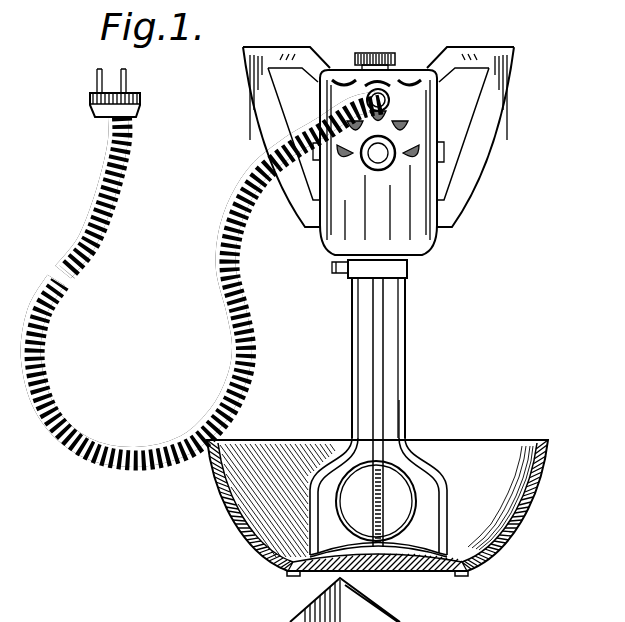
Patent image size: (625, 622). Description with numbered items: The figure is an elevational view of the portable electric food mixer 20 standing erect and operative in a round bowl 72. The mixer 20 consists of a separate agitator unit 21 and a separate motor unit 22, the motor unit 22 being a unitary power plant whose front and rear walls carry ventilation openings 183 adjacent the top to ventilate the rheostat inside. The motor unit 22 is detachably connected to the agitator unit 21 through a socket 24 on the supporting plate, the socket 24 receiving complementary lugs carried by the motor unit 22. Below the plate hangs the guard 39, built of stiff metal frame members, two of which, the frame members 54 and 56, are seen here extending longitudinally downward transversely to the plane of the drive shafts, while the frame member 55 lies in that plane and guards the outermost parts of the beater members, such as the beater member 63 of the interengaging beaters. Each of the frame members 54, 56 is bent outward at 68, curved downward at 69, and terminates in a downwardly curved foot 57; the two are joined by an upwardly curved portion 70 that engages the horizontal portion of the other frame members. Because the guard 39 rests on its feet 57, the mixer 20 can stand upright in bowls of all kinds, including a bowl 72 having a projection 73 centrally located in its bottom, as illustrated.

The electric food mixer 20 is at (413, 276).
The motor unit 22 is at (438, 193).
The socket 24 is at (408, 266).
The ventilation openings 183 is at (340, 77).
The guard 39 is at (352, 345).
The frame member 54 is at (352, 322).
The frame member 56 is at (398, 328).
The frame member 55 is at (380, 352).
The agitator unit 21 is at (405, 393).
The outward bend 68 is at (352, 440).
The downwardly curved portion 69 is at (327, 452).
The upwardly curved portion 70 is at (412, 556).
The beater member 63 is at (340, 486).
The bowl 72 is at (519, 516).
The feet 57 is at (312, 568).
The projection 73 is at (393, 558).